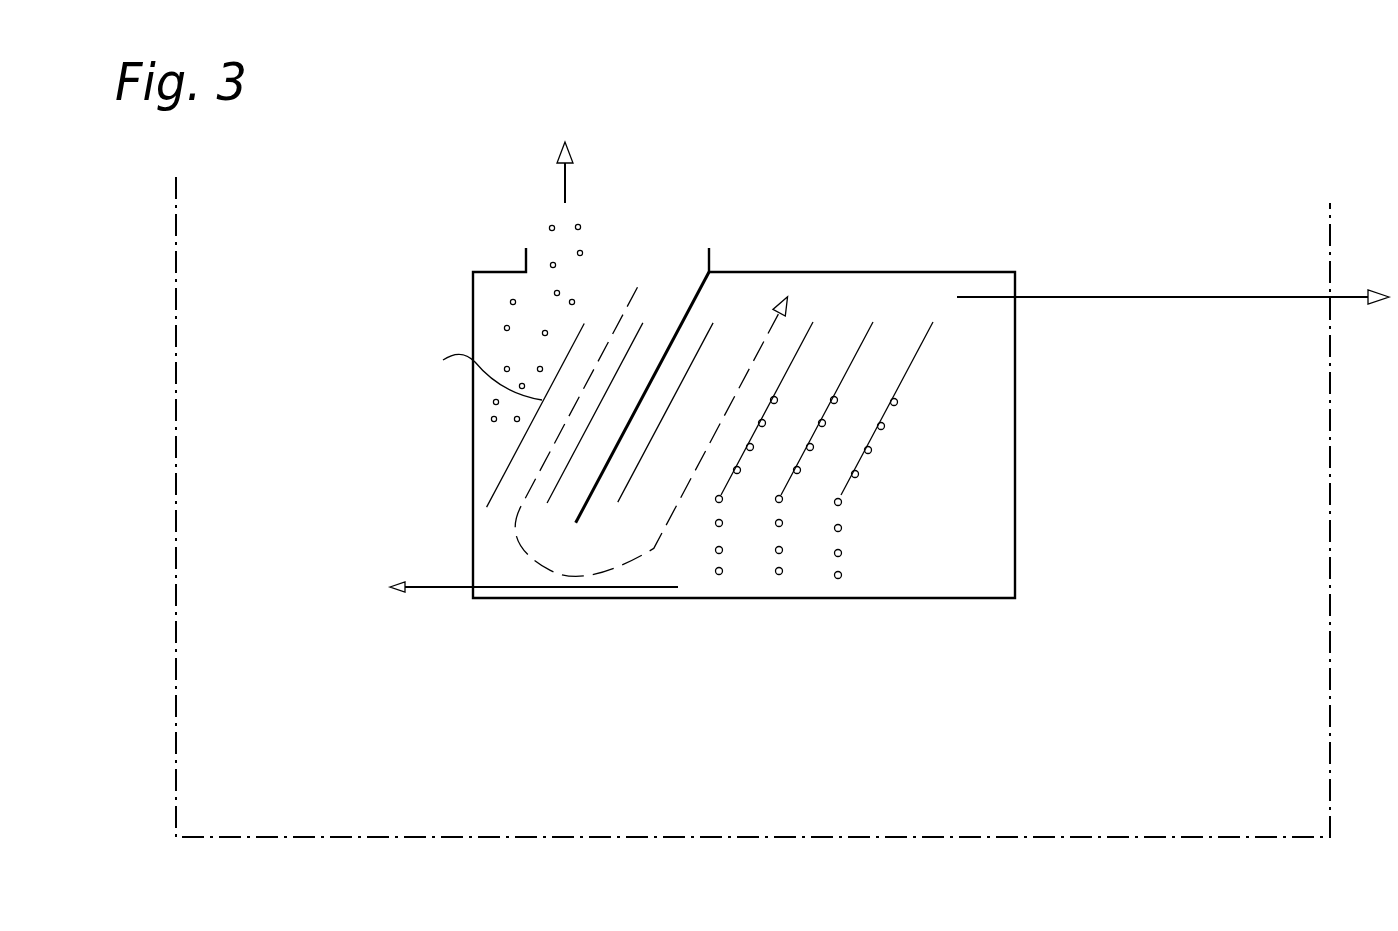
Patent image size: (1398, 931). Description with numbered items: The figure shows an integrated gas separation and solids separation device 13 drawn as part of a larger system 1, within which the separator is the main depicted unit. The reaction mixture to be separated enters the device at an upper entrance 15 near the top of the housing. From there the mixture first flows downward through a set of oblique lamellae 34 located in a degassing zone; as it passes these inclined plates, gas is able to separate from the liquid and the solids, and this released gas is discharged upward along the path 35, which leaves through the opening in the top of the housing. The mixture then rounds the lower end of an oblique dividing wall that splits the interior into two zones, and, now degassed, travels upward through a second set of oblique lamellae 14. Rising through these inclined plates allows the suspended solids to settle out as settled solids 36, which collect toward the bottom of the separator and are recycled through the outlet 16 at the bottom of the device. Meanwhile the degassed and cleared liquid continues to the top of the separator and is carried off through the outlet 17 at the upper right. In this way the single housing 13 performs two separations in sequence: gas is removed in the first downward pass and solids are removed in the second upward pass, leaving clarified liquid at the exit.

The system 1 is at (223, 414).
The integrated gas separation and solids separation device 13 is at (887, 272).
The oblique lamellae 14 is at (905, 387).
The upper entrance 15 is at (672, 240).
The solids recycle outlet 16 is at (433, 586).
The cleared liquid outlet 17 is at (1133, 297).
The oblique lamellae 34 is at (477, 374).
The gas discharge path 35 is at (562, 187).
The settled solids 36 is at (843, 553).